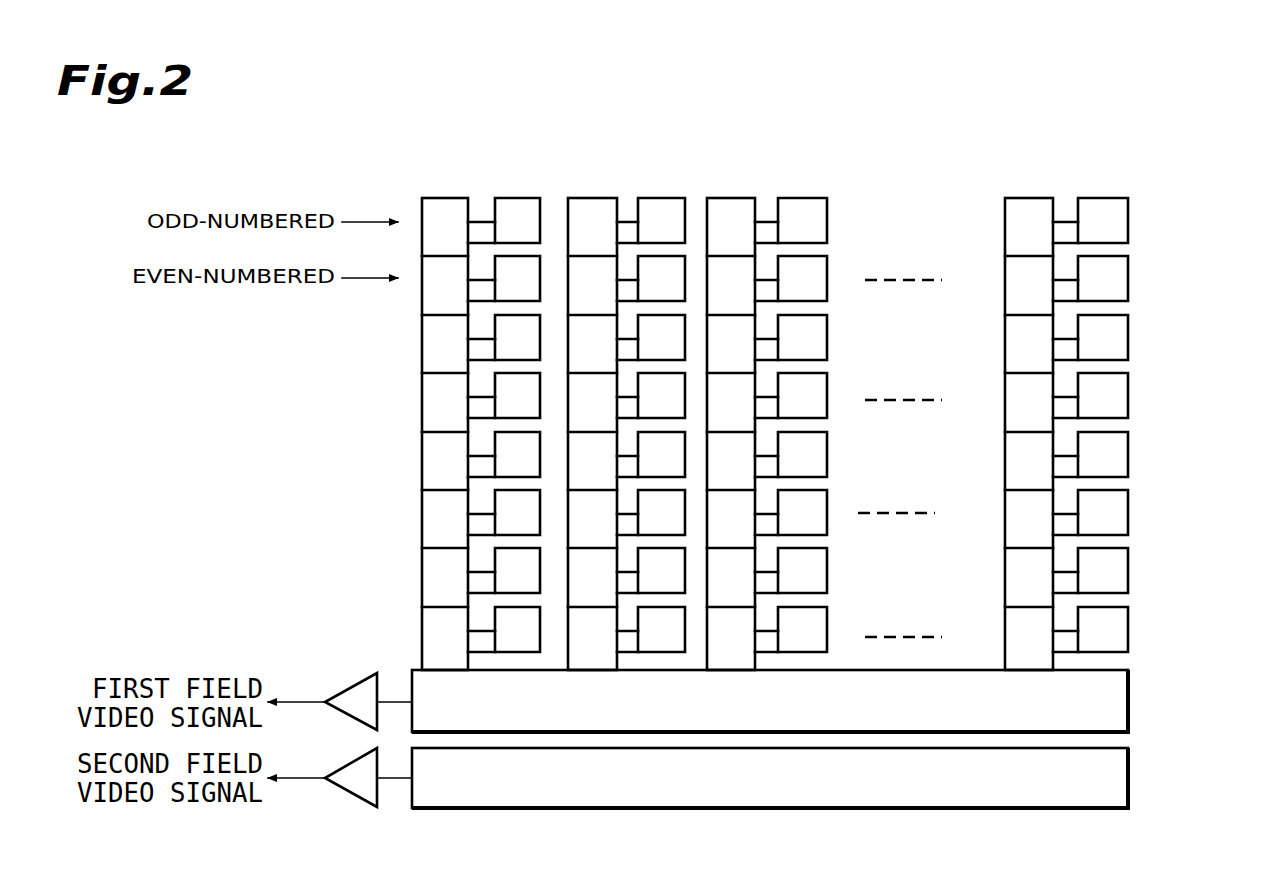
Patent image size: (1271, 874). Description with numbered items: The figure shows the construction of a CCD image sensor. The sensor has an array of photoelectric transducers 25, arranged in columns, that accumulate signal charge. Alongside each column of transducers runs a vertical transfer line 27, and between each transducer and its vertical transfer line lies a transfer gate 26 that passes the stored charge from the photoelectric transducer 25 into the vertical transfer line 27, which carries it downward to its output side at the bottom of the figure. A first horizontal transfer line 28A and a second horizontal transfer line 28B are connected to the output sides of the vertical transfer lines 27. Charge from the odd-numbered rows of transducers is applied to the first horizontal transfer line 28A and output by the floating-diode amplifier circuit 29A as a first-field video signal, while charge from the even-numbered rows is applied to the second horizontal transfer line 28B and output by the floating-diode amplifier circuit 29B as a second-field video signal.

The photoelectric transducer 25 is at (528, 197).
The transfer gate 26 is at (480, 220).
The vertical transfer line 27 is at (442, 197).
The first horizontal transfer line 28A is at (1128, 692).
The second horizontal transfer line 28B is at (1128, 780).
The floating-diode amplifier circuit 29A is at (353, 685).
The floating-diode amplifier circuit 29B is at (353, 794).